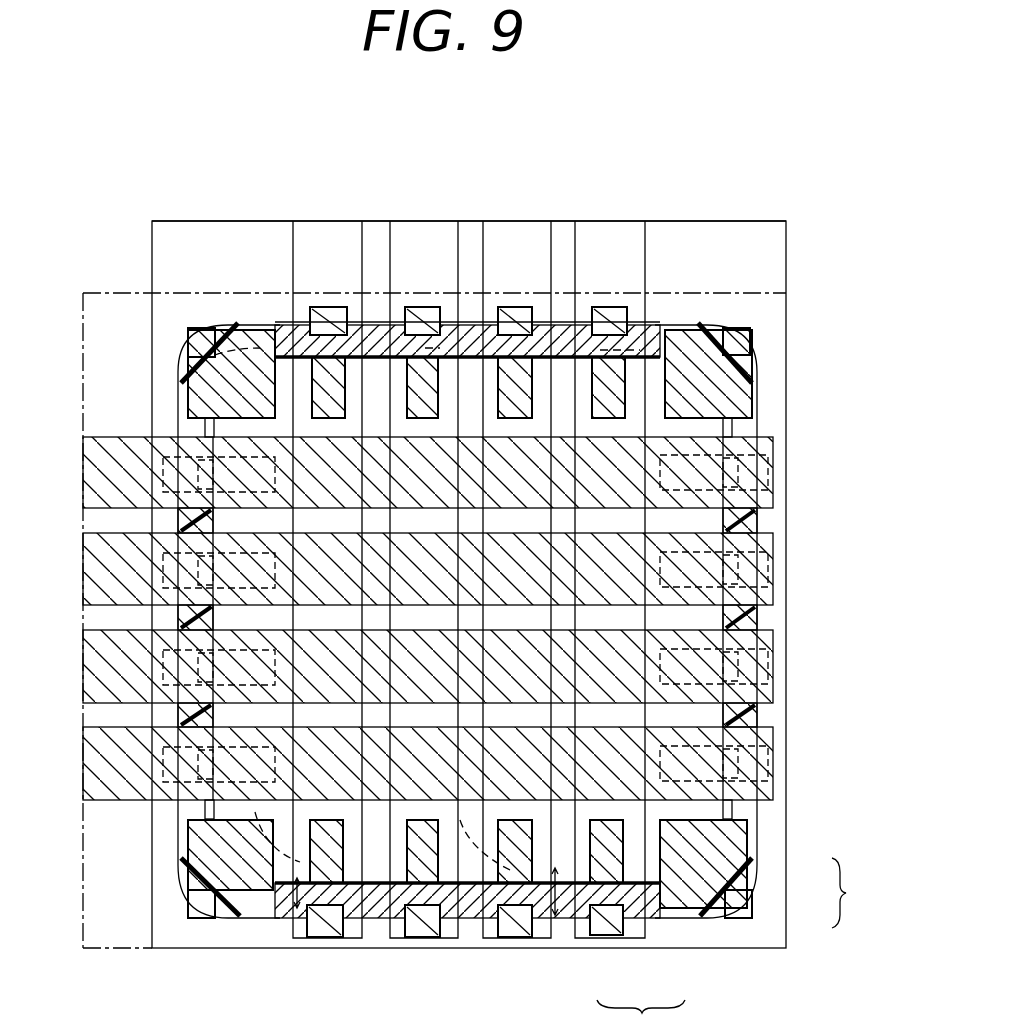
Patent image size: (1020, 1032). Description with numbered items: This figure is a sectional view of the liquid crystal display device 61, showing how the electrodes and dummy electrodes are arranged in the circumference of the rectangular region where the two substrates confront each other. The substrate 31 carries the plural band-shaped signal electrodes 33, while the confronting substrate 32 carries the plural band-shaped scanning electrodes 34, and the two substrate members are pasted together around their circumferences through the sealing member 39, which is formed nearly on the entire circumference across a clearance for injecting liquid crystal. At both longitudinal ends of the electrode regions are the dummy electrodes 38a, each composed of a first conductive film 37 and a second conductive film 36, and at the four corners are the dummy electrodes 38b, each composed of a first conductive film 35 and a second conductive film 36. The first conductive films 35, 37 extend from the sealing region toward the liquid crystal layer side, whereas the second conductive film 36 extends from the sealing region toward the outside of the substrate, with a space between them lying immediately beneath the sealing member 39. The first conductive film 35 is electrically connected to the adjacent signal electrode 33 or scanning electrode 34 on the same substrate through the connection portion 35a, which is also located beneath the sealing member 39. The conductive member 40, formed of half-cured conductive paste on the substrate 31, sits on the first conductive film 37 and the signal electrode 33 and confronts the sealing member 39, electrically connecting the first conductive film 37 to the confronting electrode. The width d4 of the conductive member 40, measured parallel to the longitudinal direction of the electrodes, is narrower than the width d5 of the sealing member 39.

The substrate 31 is at (108, 312).
The substrate 32 is at (217, 236).
The signal electrodes 33 is at (85, 498).
The scanning electrodes 34 is at (605, 222).
The first conductive film 35 is at (186, 372).
The connection portion 35a is at (183, 432).
The second conductive film 36 is at (200, 328).
The first conductive film 37 is at (327, 400).
The dummy electrode 38a is at (641, 1016).
The dummy electrode 38b is at (869, 893).
The sealing member 39 is at (632, 322).
The conductive member 40 is at (432, 350).
The liquid crystal display device 61 is at (725, 143).
The width of the conductive member d4 is at (285, 905).
The width of the sealing member d5 is at (548, 915).